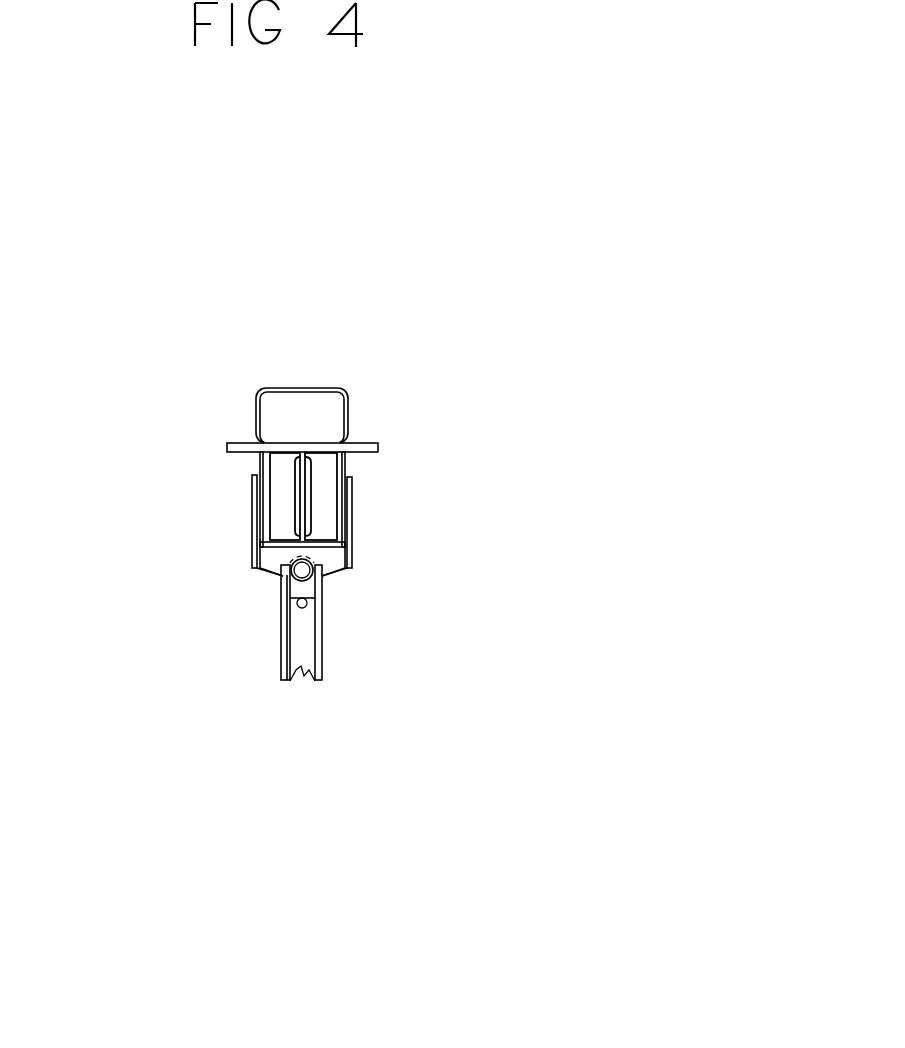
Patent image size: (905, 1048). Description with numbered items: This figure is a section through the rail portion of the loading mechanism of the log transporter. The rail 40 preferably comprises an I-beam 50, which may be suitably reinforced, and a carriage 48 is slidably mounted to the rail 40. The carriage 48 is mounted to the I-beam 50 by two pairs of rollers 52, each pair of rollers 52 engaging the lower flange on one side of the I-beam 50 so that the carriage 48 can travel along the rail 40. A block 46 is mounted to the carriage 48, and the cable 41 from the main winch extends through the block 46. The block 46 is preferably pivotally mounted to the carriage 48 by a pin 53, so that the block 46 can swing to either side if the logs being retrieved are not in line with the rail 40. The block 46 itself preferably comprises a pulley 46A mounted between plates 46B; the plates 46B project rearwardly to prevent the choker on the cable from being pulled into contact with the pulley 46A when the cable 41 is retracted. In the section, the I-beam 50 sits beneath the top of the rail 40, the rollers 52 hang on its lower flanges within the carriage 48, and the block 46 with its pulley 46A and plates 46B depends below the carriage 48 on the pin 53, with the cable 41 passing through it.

The rail 40 is at (367, 367).
The I-beam 50 is at (298, 452).
The rollers 52 is at (275, 482).
The carriage 48 is at (375, 525).
The pin 53 is at (327, 572).
The cable 41 is at (303, 603).
The block 46 is at (262, 650).
The pulley 46A is at (302, 660).
The plates 46B is at (282, 677).